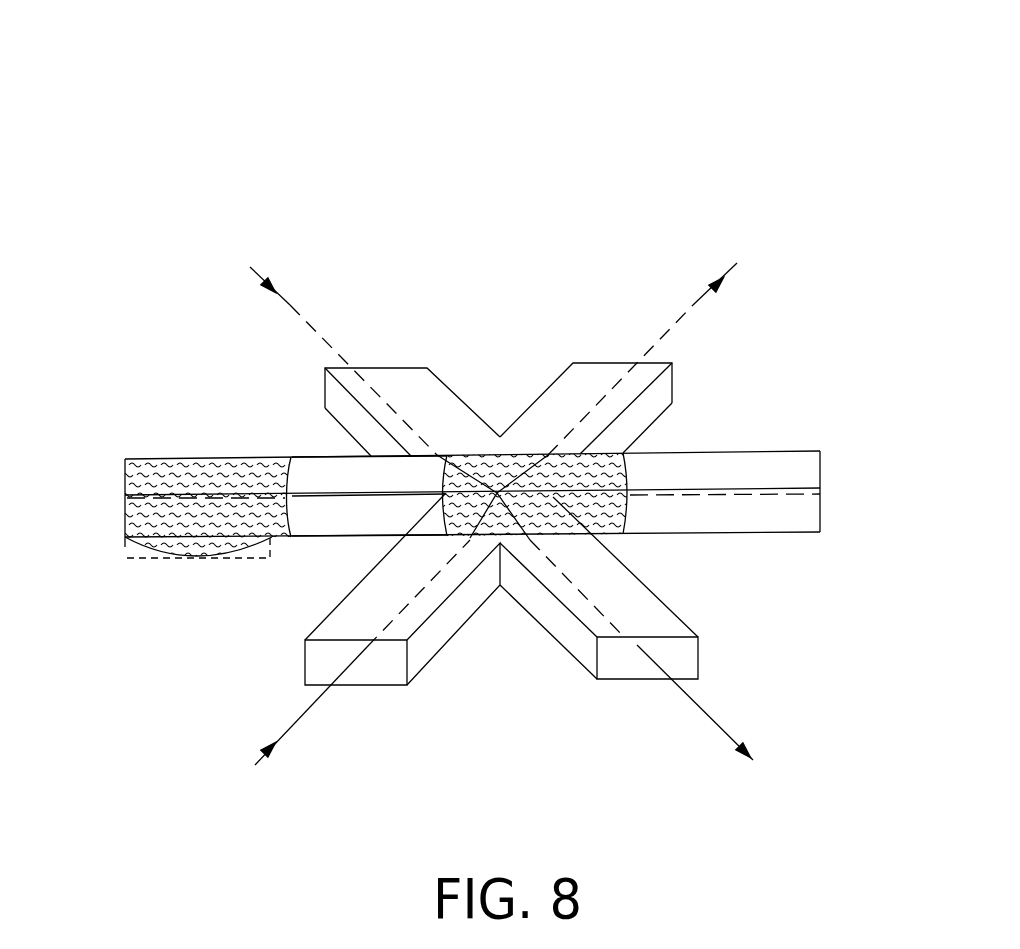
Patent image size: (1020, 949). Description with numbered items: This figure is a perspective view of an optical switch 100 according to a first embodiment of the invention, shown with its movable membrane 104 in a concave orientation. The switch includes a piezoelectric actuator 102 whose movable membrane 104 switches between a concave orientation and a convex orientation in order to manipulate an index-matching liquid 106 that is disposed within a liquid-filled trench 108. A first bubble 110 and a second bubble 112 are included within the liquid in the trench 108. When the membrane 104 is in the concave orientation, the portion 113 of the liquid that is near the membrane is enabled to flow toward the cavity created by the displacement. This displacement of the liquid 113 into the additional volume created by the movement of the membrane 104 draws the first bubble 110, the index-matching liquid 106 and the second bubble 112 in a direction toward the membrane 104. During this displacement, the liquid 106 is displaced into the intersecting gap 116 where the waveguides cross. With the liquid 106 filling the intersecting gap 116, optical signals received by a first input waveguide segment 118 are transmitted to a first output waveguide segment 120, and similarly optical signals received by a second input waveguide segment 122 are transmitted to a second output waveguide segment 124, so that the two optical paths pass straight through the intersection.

The optical switch 100 is at (718, 64).
The piezoelectric actuator 102 is at (127, 550).
The movable membrane 104 is at (182, 560).
The index-matching liquid 106 is at (640, 453).
The liquid-filled trench 108 is at (125, 475).
The first bubble 110 is at (330, 455).
The second bubble 112 is at (798, 517).
The portion of the liquid near the membrane 113 is at (237, 468).
The intersecting gap 116 is at (500, 490).
The first input waveguide segment 118 is at (317, 668).
The first output waveguide segment 120 is at (665, 397).
The second input waveguide segment 122 is at (386, 382).
The second output waveguide segment 124 is at (688, 663).